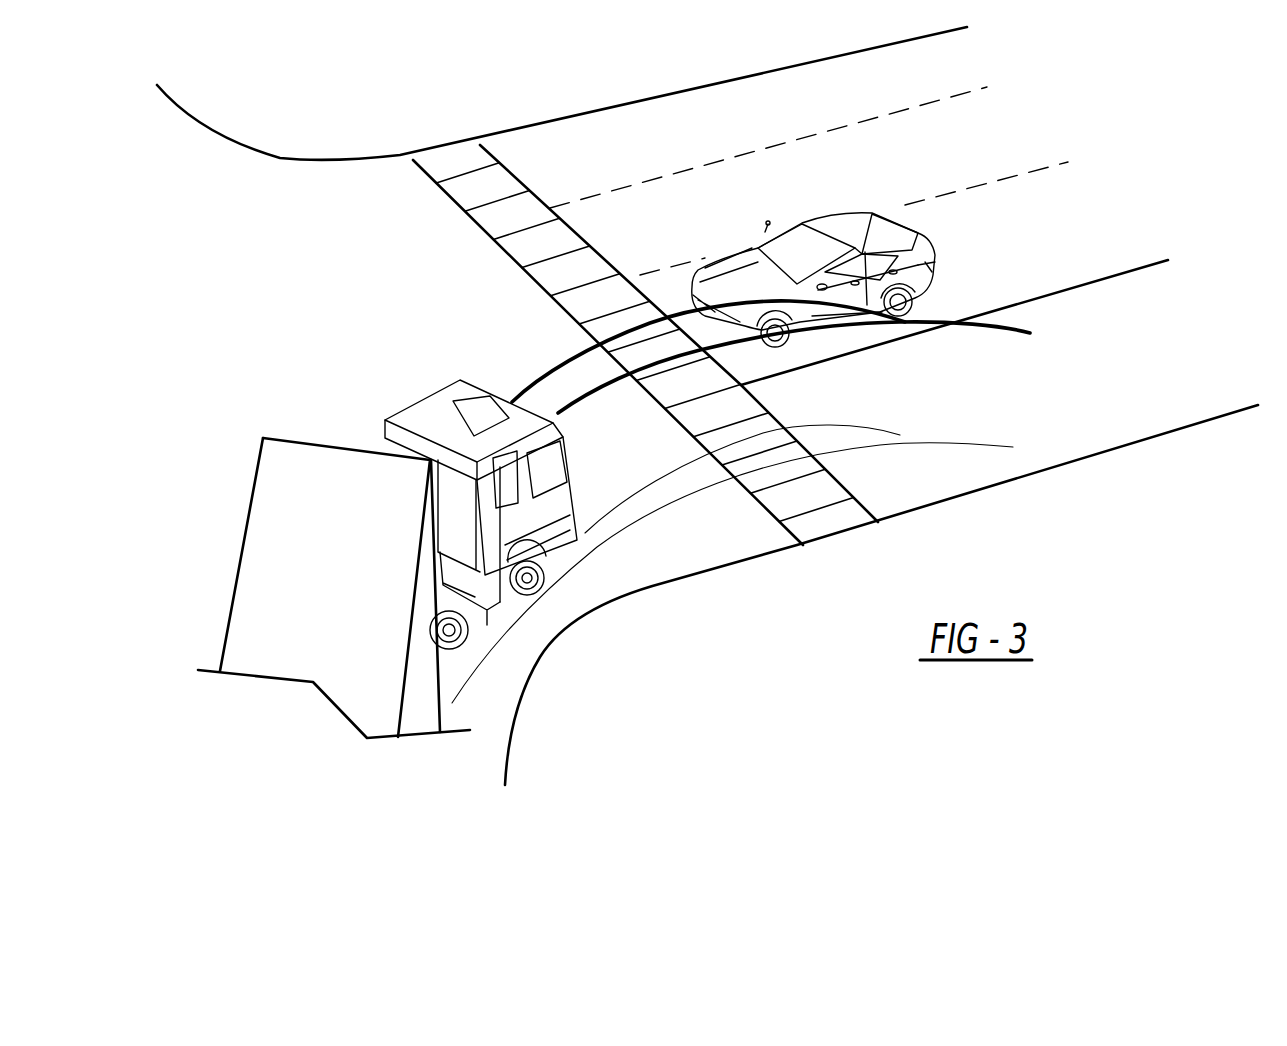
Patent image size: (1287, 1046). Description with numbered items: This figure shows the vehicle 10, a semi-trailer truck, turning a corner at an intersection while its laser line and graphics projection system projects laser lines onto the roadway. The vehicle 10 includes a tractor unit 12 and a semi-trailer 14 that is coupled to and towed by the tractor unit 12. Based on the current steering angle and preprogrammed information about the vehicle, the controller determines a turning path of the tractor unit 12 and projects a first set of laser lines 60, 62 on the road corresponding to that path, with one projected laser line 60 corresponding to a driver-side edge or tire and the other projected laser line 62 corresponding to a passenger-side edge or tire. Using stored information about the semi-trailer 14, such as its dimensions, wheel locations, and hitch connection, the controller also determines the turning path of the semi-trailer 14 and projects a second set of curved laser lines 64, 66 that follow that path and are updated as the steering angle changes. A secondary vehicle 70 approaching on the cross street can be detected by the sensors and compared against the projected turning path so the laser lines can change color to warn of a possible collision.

The vehicle 10 is at (314, 391).
The tractor unit 12 is at (430, 398).
The semi-trailer 14 is at (255, 473).
The projected laser line 60 is at (543, 378).
The projected laser line 62 is at (678, 458).
The projected laser line 64 is at (620, 378).
The projected laser line 66 is at (683, 500).
The secondary vehicle 70 is at (933, 242).